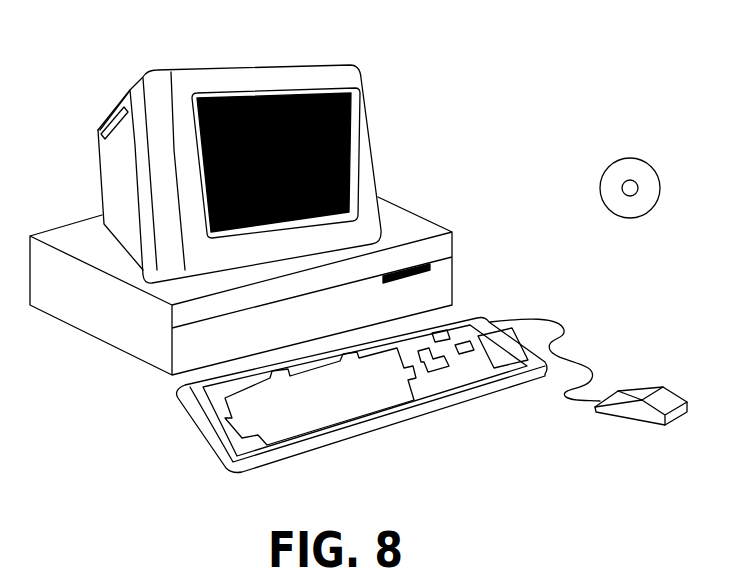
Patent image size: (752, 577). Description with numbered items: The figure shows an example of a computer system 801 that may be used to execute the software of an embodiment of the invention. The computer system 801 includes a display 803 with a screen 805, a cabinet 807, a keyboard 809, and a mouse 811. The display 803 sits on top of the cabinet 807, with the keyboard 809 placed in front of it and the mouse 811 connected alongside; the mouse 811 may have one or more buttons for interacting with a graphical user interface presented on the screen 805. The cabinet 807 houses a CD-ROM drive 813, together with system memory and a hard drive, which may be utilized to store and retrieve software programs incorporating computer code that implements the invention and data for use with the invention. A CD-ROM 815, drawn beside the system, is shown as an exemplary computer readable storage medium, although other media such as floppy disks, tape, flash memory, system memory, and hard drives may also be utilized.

The computer system 801 is at (556, 44).
The display 803 is at (374, 173).
The screen 805 is at (342, 110).
The cabinet 807 is at (137, 361).
The keyboard 809 is at (363, 432).
The mouse 811 is at (677, 390).
The CD-ROM drive 813 is at (430, 262).
The CD-ROM 815 is at (647, 162).